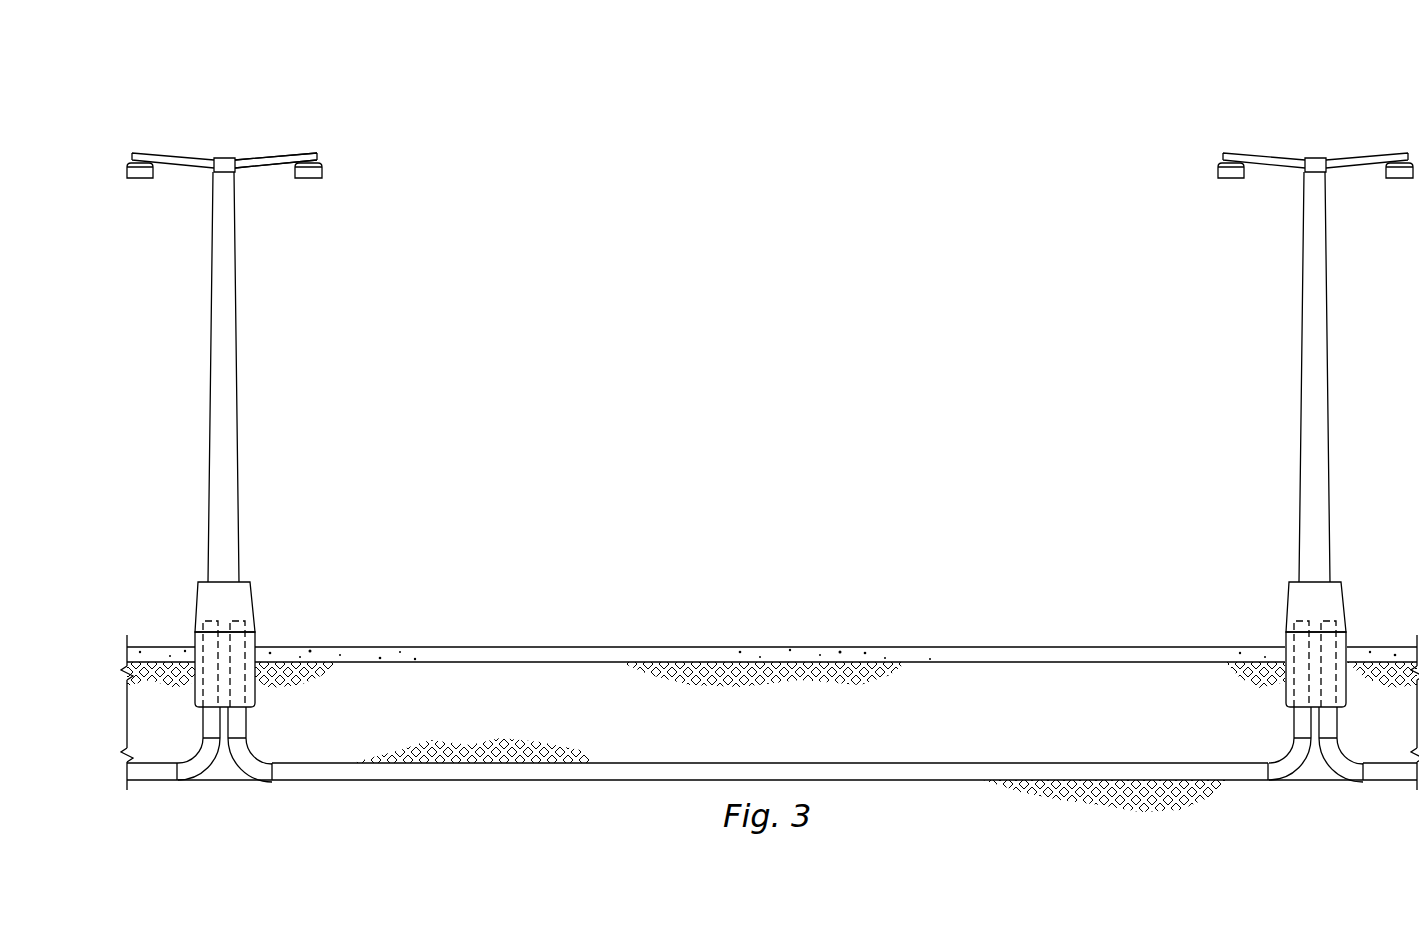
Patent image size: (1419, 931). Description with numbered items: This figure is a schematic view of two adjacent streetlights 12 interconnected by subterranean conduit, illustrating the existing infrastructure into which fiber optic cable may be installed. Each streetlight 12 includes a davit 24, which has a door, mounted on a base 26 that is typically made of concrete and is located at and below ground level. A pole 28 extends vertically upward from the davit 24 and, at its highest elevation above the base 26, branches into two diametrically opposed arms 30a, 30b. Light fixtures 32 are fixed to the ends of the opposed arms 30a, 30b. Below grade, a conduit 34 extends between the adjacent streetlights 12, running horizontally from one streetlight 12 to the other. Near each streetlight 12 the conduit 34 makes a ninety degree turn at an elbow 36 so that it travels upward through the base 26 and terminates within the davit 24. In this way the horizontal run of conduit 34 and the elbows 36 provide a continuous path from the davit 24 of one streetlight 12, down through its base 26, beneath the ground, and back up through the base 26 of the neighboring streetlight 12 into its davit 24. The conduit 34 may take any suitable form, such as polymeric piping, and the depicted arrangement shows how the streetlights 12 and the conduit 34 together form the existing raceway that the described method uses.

The streetlight 12 is at (215, 117).
The davit 24 is at (198, 606).
The base 26 is at (194, 686).
The pole 28 is at (211, 368).
The arm 30a is at (175, 154).
The arm 30b is at (270, 154).
The light fixture 32 is at (140, 179).
The conduit 34 is at (152, 782).
The elbow 36 is at (243, 767).